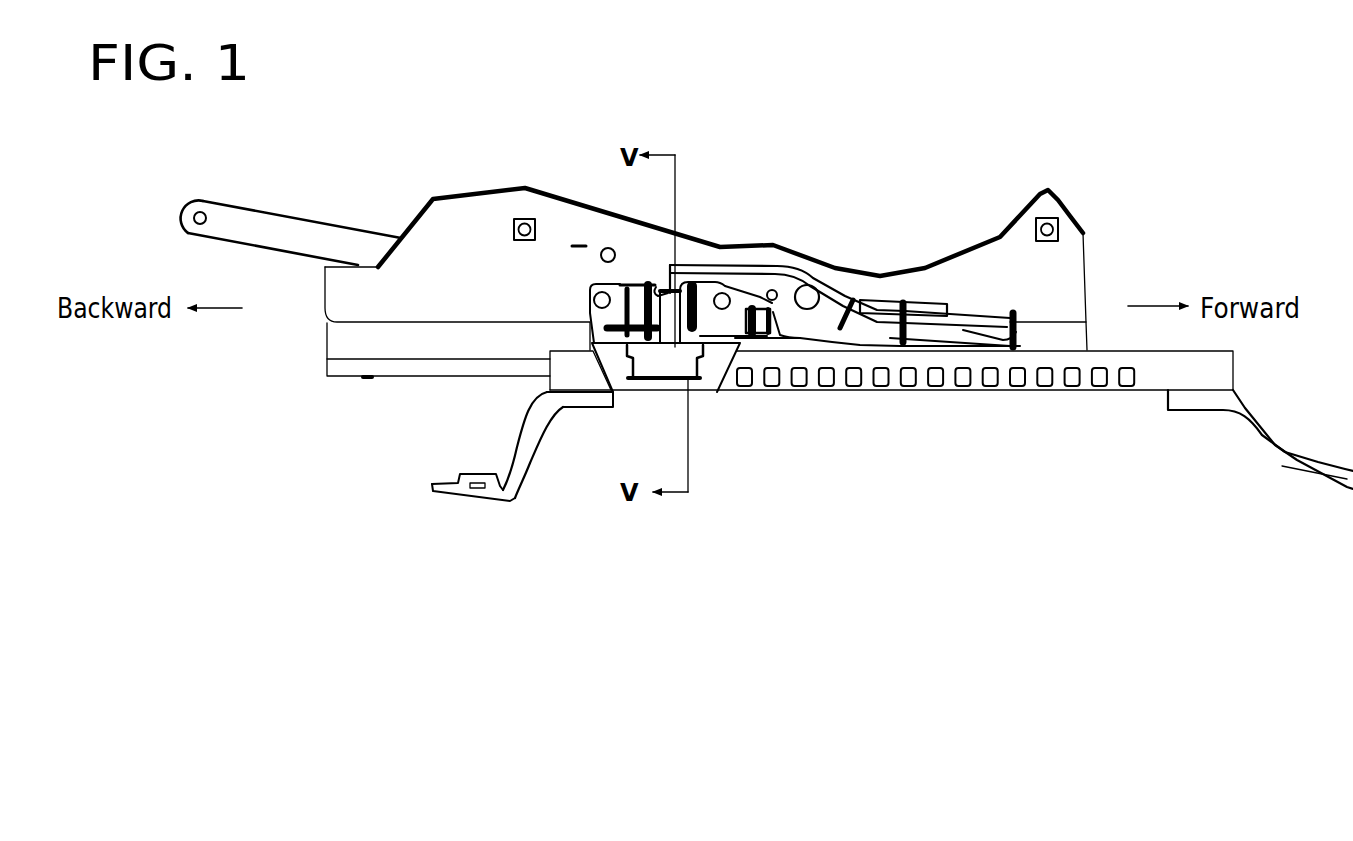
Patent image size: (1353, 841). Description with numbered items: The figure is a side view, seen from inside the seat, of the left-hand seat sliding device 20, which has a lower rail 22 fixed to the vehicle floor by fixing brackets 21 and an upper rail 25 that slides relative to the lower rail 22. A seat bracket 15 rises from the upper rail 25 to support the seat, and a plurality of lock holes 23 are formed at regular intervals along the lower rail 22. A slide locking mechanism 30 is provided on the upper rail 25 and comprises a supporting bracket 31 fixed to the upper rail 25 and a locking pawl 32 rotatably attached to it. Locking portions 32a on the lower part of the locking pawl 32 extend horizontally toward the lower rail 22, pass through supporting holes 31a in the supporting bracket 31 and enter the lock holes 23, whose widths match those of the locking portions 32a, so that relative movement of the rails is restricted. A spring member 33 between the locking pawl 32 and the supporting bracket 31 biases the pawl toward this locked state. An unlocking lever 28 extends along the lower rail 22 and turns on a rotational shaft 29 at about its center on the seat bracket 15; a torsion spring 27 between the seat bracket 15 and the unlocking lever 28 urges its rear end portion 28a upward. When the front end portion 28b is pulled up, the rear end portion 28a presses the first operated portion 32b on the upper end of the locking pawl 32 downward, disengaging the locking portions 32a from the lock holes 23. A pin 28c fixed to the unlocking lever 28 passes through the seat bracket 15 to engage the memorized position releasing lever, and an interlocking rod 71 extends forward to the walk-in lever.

The seat bracket 15 is at (482, 220).
The interlocking rod 71 is at (292, 221).
The sliding device 20 is at (815, 428).
The fixing bracket 21 is at (537, 449).
The lower rail 22 is at (891, 412).
The lock hole 23 is at (772, 390).
The upper rail 25 is at (453, 376).
The torsion spring 27 is at (955, 300).
The unlocking lever 28 is at (832, 328).
The rear end portion 28a is at (662, 288).
The front end portion 28b is at (973, 353).
The pin 28c is at (780, 286).
The rotational shaft 29 is at (810, 285).
The slide locking mechanism 30 is at (582, 295).
The supporting bracket 31 is at (726, 372).
The supporting hole 31a is at (700, 380).
The locking pawl 32 is at (658, 319).
The locking portion 32a is at (638, 393).
The first operated portion 32b is at (648, 288).
The spring member 33 is at (727, 298).